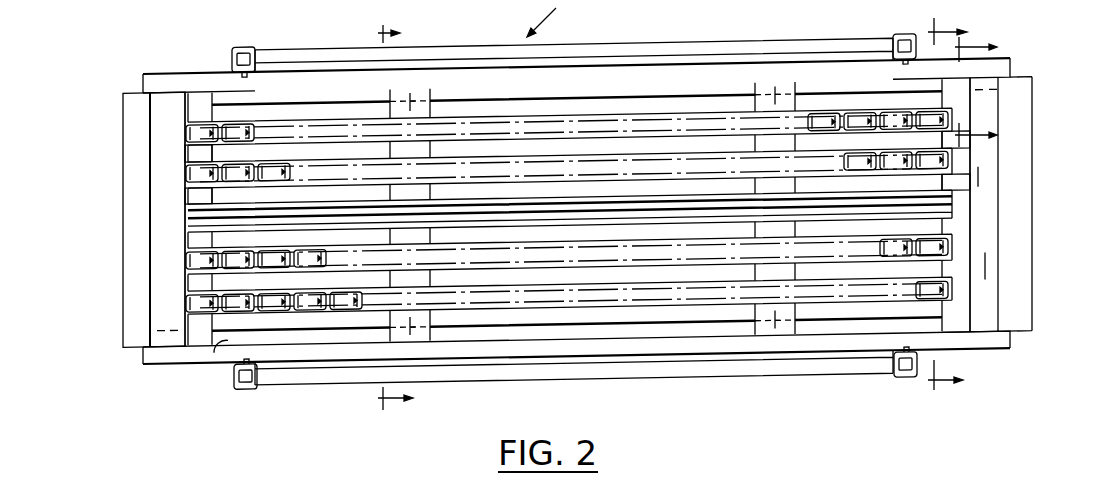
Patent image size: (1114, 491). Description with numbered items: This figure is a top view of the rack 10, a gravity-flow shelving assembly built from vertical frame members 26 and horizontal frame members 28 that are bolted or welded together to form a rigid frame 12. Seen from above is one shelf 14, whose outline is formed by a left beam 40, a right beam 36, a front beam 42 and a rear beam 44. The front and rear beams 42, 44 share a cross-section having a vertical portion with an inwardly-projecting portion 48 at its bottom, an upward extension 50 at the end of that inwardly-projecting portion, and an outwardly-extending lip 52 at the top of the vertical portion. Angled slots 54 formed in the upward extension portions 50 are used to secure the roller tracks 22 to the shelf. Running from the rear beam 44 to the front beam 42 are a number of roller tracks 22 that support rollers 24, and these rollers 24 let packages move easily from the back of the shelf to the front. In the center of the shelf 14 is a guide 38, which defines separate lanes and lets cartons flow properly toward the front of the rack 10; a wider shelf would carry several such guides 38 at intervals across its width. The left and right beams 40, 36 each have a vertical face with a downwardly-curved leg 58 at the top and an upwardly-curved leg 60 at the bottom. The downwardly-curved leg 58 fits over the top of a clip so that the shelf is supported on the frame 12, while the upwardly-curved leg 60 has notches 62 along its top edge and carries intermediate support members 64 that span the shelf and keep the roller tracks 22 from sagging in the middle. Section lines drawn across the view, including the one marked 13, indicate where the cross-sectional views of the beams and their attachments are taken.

The rack 10 is at (537, 19).
The frame 12 is at (403, 218).
The section line 13- 13 is at (955, 208).
The shelf 14 is at (1025, 373).
The roller track 22 is at (722, 152).
The roller 24 is at (240, 130).
The vertical frame member 26 is at (244, 47).
The horizontal frame member 28 is at (582, 50).
The right beam 36 is at (163, 358).
The guide 38 is at (948, 204).
The left beam 40 is at (162, 80).
The front beam 42 is at (184, 290).
The rear beam 44 is at (988, 256).
The inwardly-projecting portion 48 is at (197, 97).
The upward extension 50 is at (227, 350).
The outwardly-extending lip 52 is at (140, 327).
The angled slot 54 is at (183, 160).
The downwardly-curved leg 58 is at (733, 351).
The upwardly-curved leg 60 is at (663, 331).
The notch 62 is at (680, 90).
The intermediate support member 64 is at (418, 100).